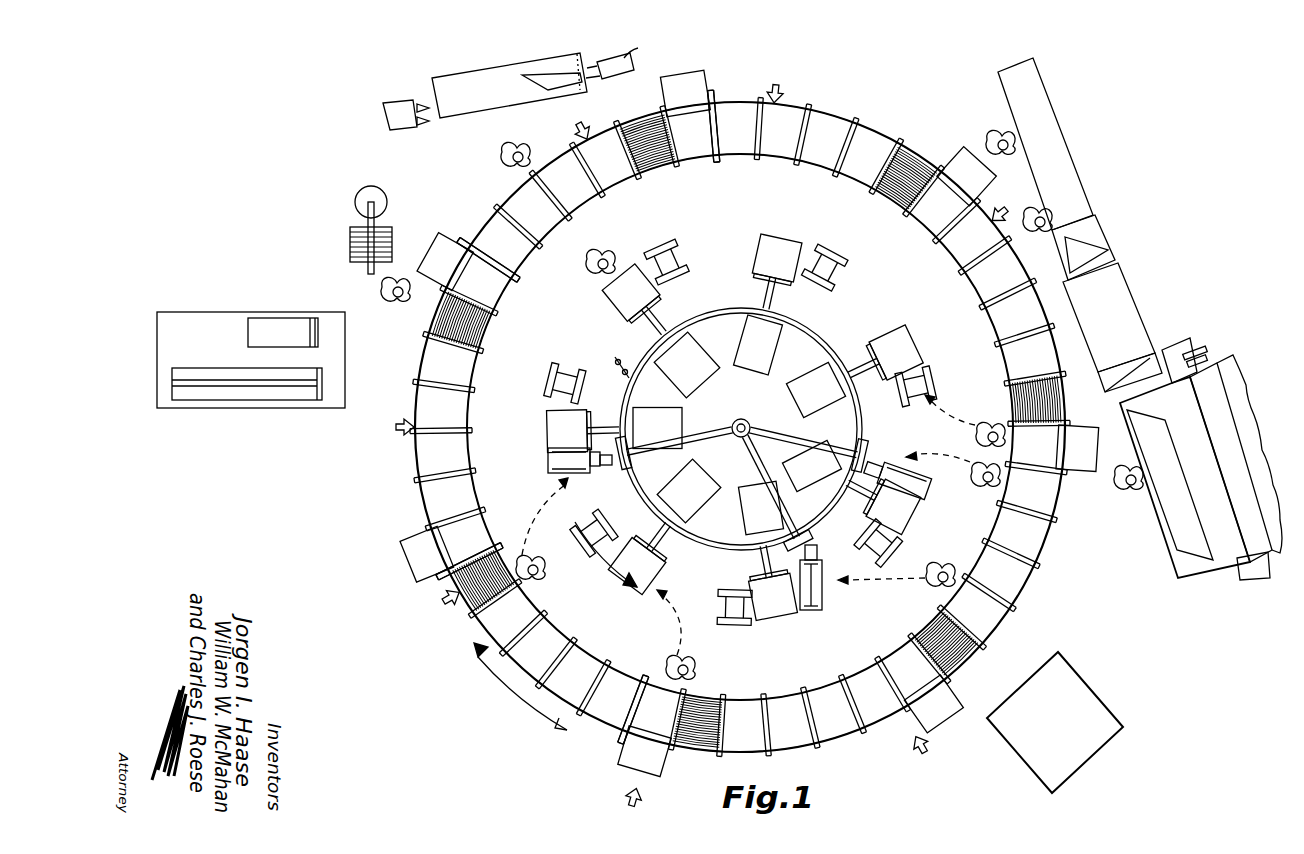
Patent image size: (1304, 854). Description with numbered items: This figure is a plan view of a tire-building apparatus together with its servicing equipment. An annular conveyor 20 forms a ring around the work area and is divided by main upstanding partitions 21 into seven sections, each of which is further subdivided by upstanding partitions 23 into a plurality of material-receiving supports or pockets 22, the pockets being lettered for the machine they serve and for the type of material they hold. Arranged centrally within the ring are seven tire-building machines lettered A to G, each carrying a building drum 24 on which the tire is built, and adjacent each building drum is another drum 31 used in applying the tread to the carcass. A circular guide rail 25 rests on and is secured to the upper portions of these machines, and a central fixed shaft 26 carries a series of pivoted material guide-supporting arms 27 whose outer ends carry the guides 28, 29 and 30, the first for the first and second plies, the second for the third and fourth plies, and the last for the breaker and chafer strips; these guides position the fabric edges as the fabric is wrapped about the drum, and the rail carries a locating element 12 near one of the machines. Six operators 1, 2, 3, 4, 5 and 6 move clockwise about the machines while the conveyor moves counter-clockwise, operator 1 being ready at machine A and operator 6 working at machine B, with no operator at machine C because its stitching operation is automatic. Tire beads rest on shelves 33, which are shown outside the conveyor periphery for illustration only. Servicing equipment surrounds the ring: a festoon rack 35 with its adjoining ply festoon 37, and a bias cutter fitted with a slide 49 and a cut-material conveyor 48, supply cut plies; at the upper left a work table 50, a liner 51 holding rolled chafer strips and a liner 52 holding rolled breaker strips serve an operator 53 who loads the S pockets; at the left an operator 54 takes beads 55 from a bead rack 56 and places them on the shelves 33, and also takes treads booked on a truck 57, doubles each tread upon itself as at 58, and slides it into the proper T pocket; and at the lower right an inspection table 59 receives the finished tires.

The operator 1 is at (542, 533).
The operator 2 is at (678, 635).
The operator 3 is at (896, 564).
The operator 4 is at (972, 474).
The operator 5 is at (990, 422).
The operator 6 is at (596, 254).
The turntable stop 12 is at (633, 365).
The annular conveyor 20 is at (882, 125).
The main upstanding partition 21 is at (716, 100).
The material-receiving support or pocket 22 is at (852, 128).
The upstanding partition 23 is at (828, 112).
The building drum 24 is at (612, 300).
The circular guide rail 25 is at (822, 335).
The shaft 26 is at (746, 420).
The material guide-supporting arm 27 is at (714, 438).
The guide 28 is at (548, 458).
The guide 29 is at (816, 610).
The guide 30 is at (918, 492).
The drum 31 is at (680, 248).
The shelf 33 is at (452, 248).
The festoon rack 35 is at (1098, 232).
The ply festoon 37 is at (1098, 260).
The bias cutter conveyor 48 is at (1168, 518).
The slide 49 is at (1182, 580).
The work table 50 is at (482, 86).
The liner 51 is at (382, 115).
The liner 52 is at (614, 78).
The operator 53 is at (500, 160).
The operator 54 is at (382, 290).
The beads 55 is at (393, 240).
The bead rack 56 is at (356, 200).
The truck 57 is at (162, 340).
The doubled tread 58 is at (288, 325).
The inspection table 59 is at (1062, 666).